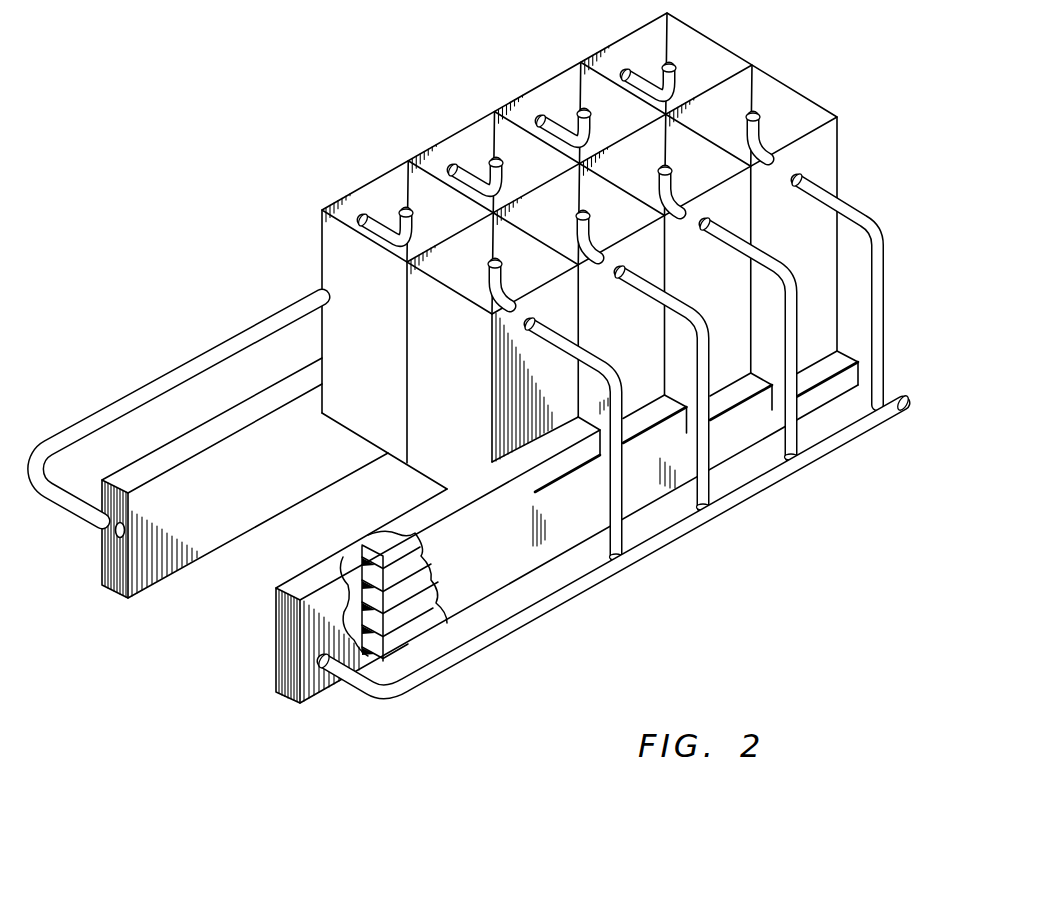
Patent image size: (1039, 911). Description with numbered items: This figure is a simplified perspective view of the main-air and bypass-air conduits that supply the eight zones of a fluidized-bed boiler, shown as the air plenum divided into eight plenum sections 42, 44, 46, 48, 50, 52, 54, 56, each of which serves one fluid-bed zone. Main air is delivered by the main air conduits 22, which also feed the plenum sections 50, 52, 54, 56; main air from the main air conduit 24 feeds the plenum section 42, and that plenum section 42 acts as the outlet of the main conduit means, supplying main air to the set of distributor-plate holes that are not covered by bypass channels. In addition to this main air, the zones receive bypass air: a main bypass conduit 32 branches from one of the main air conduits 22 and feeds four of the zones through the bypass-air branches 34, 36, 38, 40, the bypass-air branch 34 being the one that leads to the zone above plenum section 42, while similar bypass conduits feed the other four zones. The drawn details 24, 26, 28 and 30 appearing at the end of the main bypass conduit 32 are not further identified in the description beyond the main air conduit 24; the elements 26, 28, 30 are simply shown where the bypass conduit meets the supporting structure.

The main air conduit 22 is at (101, 557).
The main air conduit 24 is at (367, 553).
The upper partition 26 is at (362, 572).
The lower partition 28 is at (373, 610).
The bottom passage 30 is at (375, 645).
The main bypass conduit 32 is at (568, 595).
The bypass-air branch 34 is at (623, 537).
The bypass-air branch 36 is at (710, 483).
The bypass-air branch 38 is at (797, 432).
The bypass-air branch 40 is at (883, 380).
The plenum section 42 is at (532, 274).
The plenum section 44 is at (620, 227).
The plenum section 46 is at (702, 171).
The plenum section 48 is at (790, 132).
The plenum section 50 is at (445, 226).
The plenum section 52 is at (532, 177).
The plenum section 54 is at (619, 132).
The plenum section 56 is at (704, 86).